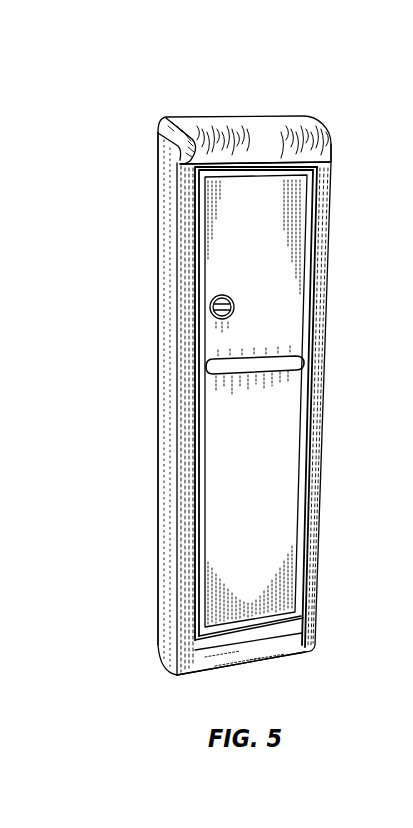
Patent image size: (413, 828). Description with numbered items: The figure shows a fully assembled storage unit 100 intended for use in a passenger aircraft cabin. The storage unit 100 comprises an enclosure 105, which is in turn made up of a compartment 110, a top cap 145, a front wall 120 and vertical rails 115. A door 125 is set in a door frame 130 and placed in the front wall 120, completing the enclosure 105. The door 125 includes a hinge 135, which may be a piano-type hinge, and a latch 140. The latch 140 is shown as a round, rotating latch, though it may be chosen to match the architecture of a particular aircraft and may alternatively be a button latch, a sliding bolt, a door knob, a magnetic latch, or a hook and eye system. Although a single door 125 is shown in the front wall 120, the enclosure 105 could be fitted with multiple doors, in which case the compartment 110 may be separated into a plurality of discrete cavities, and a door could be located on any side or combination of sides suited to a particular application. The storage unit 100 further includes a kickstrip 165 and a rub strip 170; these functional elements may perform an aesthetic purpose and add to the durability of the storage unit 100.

The storage unit 100 is at (150, 78).
The enclosure 105 is at (265, 151).
The compartment 110 is at (158, 258).
The vertical rails 115 is at (178, 565).
The front wall 120 is at (293, 623).
The door 125 is at (275, 255).
The door frame 130 is at (193, 427).
The hinge 135 is at (308, 437).
The latch 140 is at (210, 309).
The top cap 145 is at (245, 123).
The kickstrip 165 is at (247, 653).
The rub strip 170 is at (292, 368).